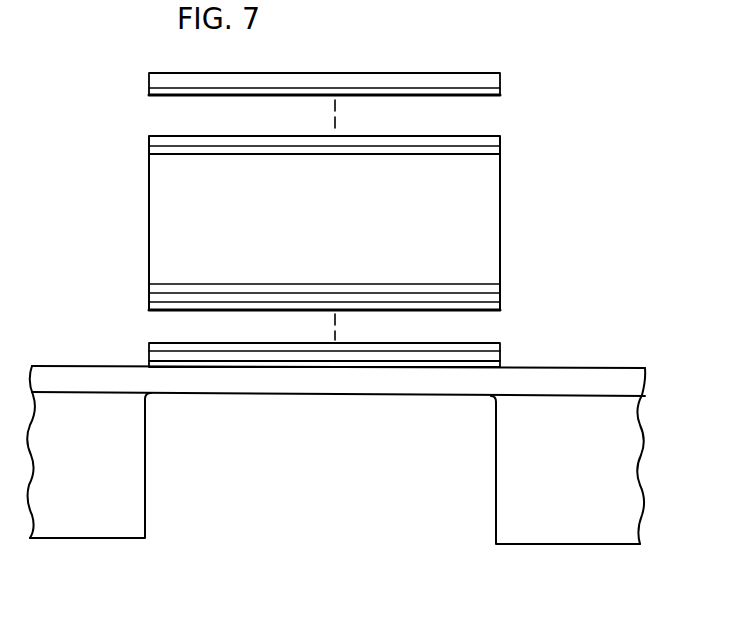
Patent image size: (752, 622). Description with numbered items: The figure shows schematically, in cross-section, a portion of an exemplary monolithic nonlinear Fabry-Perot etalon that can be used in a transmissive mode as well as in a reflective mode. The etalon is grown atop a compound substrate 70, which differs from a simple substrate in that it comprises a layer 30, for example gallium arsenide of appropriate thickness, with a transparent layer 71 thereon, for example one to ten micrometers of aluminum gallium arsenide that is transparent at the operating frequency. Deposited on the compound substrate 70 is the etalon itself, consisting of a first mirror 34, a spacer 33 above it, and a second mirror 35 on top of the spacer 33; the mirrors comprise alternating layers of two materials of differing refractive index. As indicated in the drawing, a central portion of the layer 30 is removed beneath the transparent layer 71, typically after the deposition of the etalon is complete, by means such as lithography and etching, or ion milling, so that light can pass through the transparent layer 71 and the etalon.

The second mirror 35 is at (539, 128).
The spacer 33 is at (488, 212).
The first mirror 34 is at (539, 336).
The transparent layer 71 is at (593, 378).
The compound substrate 70 is at (358, 459).
The layer 30 is at (545, 537).